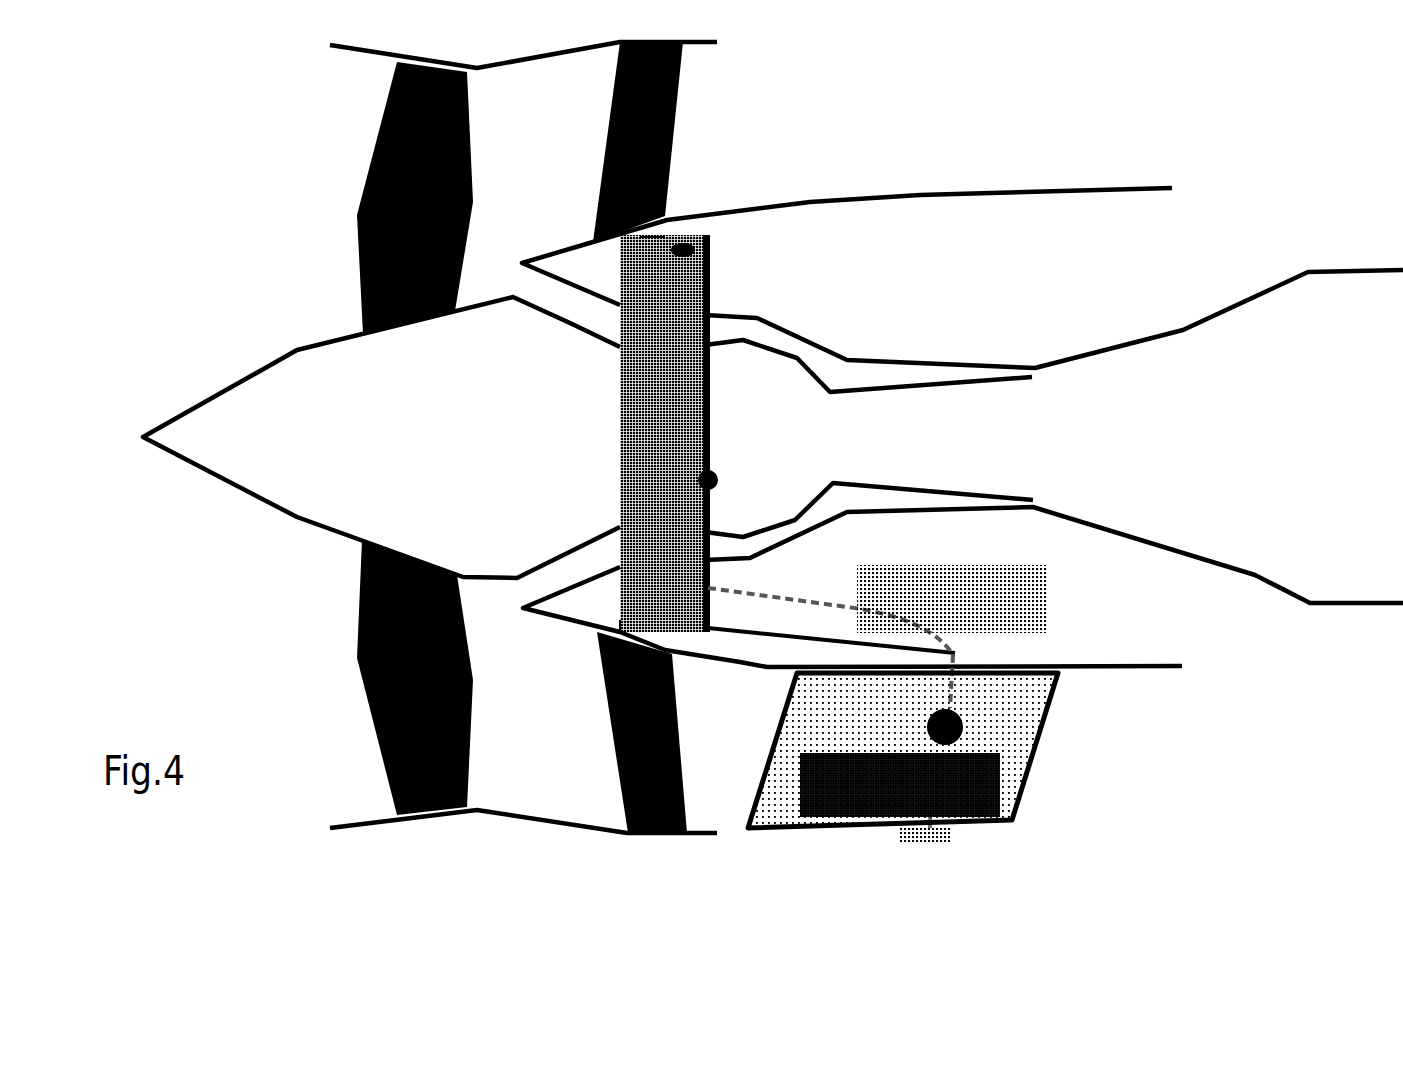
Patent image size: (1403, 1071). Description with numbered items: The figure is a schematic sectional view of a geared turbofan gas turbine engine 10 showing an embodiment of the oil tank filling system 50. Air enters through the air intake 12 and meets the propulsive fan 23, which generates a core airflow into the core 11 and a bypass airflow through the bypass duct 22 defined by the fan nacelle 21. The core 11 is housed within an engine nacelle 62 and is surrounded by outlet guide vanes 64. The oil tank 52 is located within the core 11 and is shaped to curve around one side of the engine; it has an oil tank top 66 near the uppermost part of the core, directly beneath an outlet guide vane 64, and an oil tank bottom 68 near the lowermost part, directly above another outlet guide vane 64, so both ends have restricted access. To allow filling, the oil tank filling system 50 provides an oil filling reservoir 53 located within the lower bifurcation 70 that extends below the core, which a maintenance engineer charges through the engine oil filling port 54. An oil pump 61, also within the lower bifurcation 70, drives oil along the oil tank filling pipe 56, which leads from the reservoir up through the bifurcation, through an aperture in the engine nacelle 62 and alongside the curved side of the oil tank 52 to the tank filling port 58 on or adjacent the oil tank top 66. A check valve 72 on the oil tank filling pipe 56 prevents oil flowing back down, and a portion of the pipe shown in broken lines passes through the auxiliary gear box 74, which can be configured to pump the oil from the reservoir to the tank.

The gas turbine engine 10 is at (1150, 99).
The core 11 is at (1011, 253).
The air intake 12 is at (318, 255).
The fan nacelle 21 is at (360, 52).
The bypass duct 22 is at (513, 150).
The propulsive fan 23 is at (370, 167).
The oil tank filling system 50 is at (1112, 899).
The oil tank 52 is at (641, 433).
The oil filling reservoir 53 is at (987, 787).
The engine oil filling port 54 is at (900, 837).
The oil tank filling pipe 56 is at (707, 265).
The tank filling port 58 is at (673, 242).
The oil pump 61 is at (963, 733).
The engine nacelle 62 is at (1123, 187).
The outlet guide vane 64 is at (677, 92).
The oil tank top 66 is at (653, 242).
The oil tank bottom 68 is at (615, 623).
The lower bifurcation 70 is at (1025, 783).
The check valve 72 is at (720, 475).
The auxiliary gear box 74 is at (1050, 613).